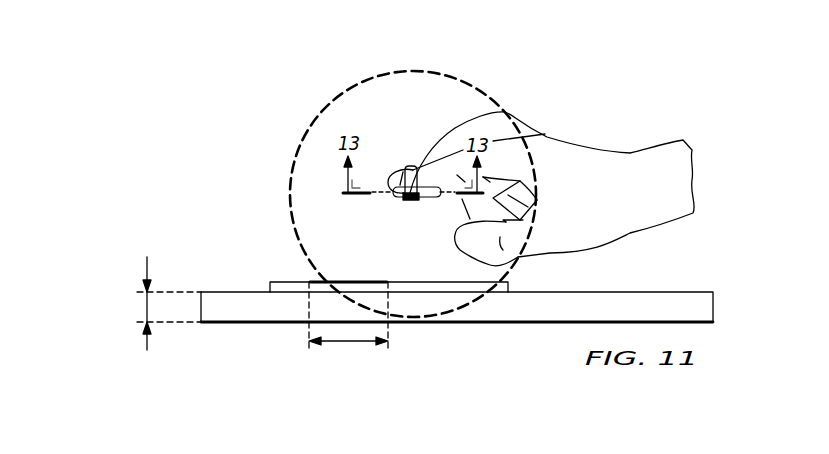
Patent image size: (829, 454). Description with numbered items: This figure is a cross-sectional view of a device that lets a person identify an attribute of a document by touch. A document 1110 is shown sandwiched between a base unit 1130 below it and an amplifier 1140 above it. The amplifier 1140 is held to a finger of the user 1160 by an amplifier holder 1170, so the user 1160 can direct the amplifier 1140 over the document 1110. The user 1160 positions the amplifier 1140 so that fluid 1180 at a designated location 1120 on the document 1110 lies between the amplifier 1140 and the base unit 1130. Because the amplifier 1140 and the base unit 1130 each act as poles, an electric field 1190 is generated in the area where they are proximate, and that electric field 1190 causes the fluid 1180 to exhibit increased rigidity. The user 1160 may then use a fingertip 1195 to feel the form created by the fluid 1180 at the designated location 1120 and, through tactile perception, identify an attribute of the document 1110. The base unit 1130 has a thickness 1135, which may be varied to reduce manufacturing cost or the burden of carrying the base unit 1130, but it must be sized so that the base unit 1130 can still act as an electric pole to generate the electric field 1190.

The document 1110 is at (270, 287).
The designated location 1120 is at (350, 342).
The base unit 1130 is at (482, 322).
The thickness 1135 is at (147, 268).
The amplifier 1140 is at (405, 167).
The user 1160 is at (662, 142).
The amplifier holder 1170 is at (487, 120).
The fluid 1180 is at (348, 282).
The electric field 1190 is at (301, 148).
The fingertip 1195 is at (412, 203).